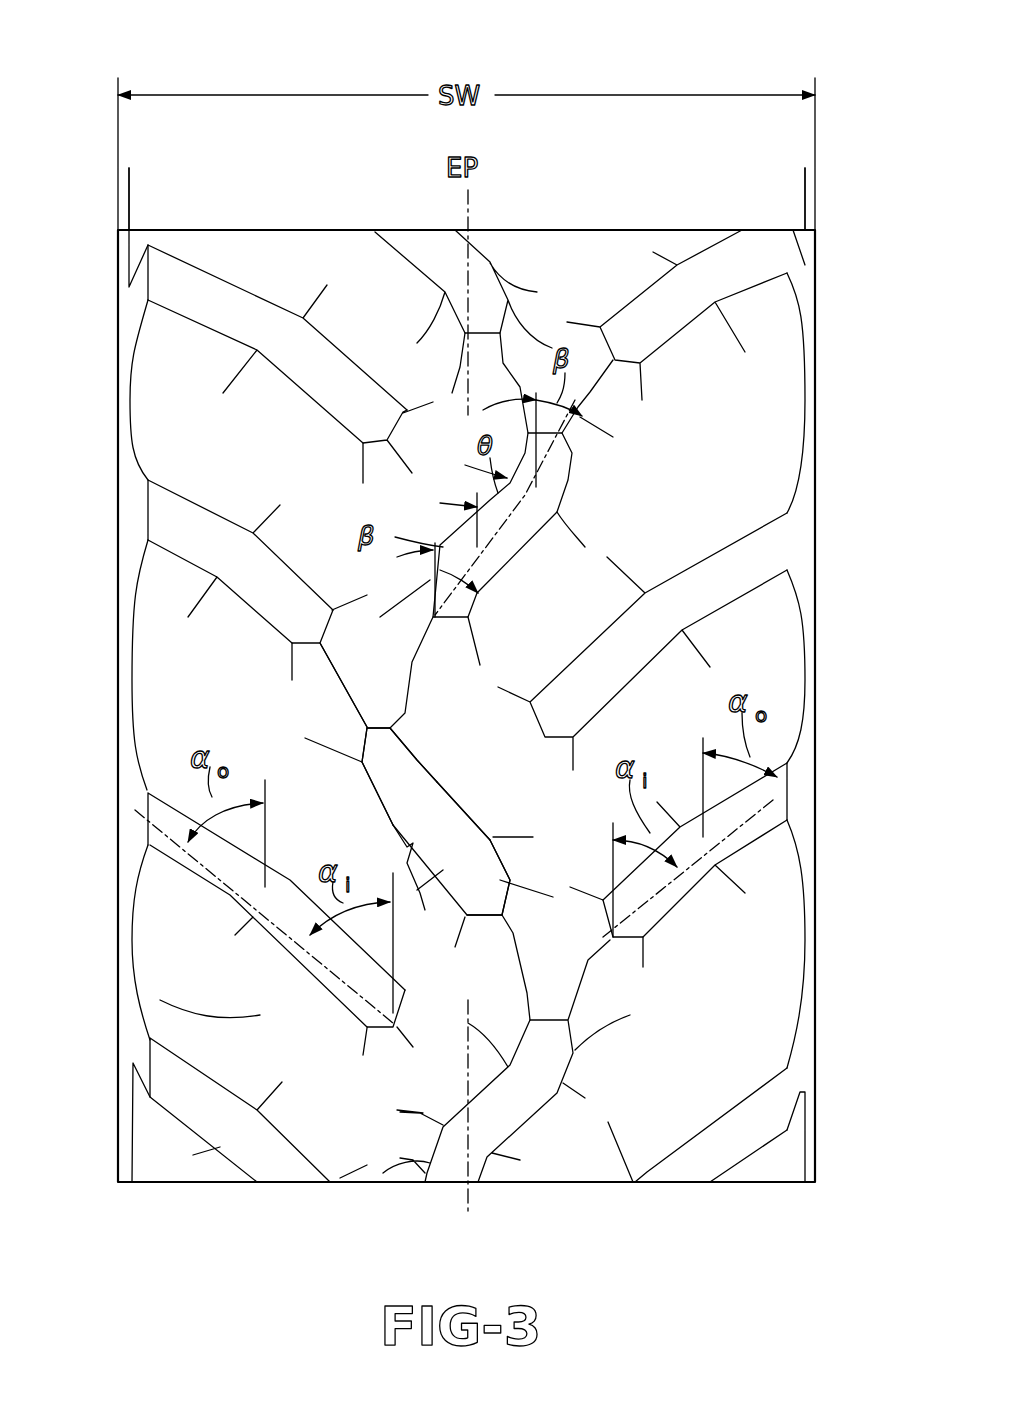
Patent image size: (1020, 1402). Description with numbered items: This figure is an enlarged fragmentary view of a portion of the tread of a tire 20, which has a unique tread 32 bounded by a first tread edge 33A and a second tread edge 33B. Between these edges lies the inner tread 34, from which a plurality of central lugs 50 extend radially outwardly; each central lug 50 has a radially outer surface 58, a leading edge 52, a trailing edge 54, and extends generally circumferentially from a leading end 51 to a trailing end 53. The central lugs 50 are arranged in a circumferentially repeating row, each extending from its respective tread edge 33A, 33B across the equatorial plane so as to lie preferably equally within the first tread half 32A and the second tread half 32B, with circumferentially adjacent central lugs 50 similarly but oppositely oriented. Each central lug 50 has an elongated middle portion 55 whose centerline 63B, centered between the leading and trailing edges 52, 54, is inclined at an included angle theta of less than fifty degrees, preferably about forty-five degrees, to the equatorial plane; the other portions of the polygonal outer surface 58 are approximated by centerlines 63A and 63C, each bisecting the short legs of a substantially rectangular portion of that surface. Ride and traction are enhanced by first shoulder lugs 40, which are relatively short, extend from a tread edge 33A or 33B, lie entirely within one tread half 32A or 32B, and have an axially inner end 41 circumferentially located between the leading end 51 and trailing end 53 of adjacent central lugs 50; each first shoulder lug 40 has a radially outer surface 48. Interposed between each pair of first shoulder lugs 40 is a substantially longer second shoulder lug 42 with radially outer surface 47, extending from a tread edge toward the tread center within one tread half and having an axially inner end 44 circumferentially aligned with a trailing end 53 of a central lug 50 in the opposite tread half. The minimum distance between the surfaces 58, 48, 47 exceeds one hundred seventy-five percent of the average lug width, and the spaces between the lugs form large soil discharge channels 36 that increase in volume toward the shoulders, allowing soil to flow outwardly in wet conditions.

The tire 20 is at (91, 118).
The tread 32 is at (740, 425).
The first tread half 32A is at (602, 262).
The second tread half 32B is at (331, 258).
The first tread edge 33A is at (805, 188).
The second tread edge 33B is at (130, 188).
The inner tread 34 is at (770, 660).
The soil discharge channels 36 is at (257, 1017).
The first shoulder lug 40 is at (163, 525).
The axially inner end of first shoulder lug 41 is at (377, 442).
The second shoulder lug 42 is at (210, 297).
The axially inner end of second shoulder lug 44 is at (310, 650).
The radially outer surface of second shoulder lug 47 is at (213, 324).
The radially outer surface of first shoulder lug 48 is at (193, 560).
The central lug 50 is at (388, 712).
The leading end 51 is at (483, 917).
The leading edge 52 is at (416, 884).
The trailing end 53 is at (392, 730).
The trailing edge 54 is at (423, 765).
The middle portion 55 is at (405, 817).
The radially outer surface of central lug 58 is at (368, 772).
The centerline of central lug portion 63A is at (480, 873).
The centerline of middle portion 63B is at (432, 817).
The centerline of central lug portion 63C is at (395, 730).